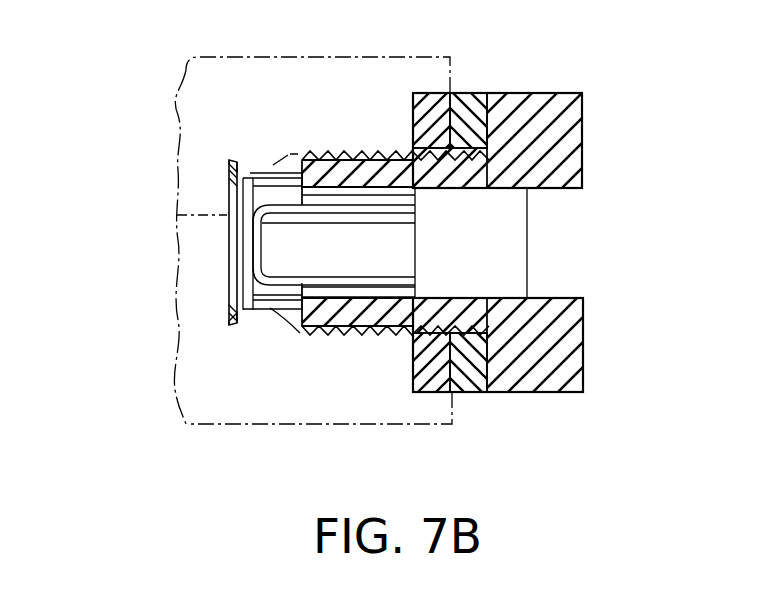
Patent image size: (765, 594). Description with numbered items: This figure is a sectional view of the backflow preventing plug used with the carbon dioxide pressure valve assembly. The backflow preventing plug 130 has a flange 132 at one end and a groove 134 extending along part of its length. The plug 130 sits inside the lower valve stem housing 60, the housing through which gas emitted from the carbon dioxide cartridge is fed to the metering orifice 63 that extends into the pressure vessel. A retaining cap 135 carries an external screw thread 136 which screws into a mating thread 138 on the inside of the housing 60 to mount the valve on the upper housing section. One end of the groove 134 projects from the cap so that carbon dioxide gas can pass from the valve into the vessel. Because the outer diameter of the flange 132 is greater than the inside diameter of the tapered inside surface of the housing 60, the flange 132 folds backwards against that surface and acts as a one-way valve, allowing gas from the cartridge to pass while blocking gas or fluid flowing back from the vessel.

The lower valve stem housing 60 is at (205, 366).
The metering orifice 63 is at (187, 243).
The backflow preventing plug 130 is at (397, 199).
The flange 132 is at (228, 167).
The groove 134 is at (383, 249).
The retaining cap 135 is at (523, 103).
The external screw thread 136 is at (370, 337).
The mating thread 138 is at (320, 333).